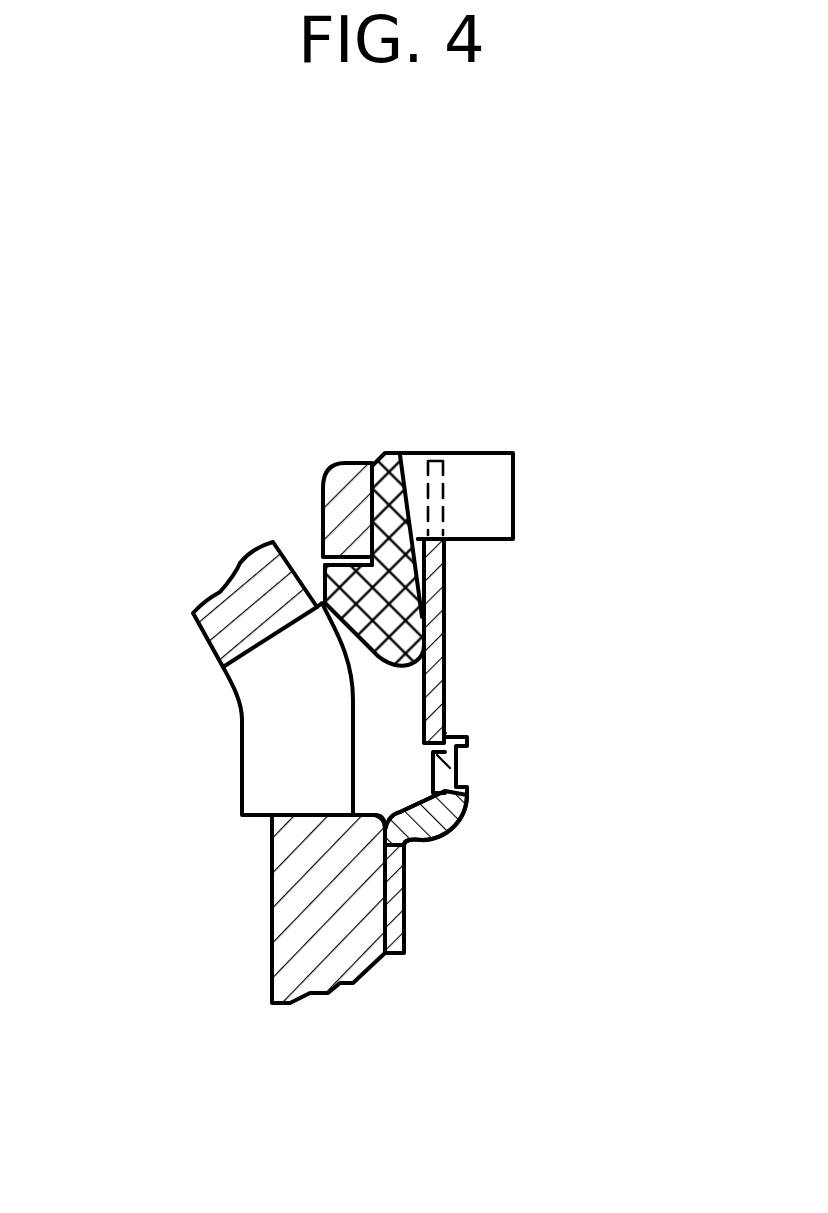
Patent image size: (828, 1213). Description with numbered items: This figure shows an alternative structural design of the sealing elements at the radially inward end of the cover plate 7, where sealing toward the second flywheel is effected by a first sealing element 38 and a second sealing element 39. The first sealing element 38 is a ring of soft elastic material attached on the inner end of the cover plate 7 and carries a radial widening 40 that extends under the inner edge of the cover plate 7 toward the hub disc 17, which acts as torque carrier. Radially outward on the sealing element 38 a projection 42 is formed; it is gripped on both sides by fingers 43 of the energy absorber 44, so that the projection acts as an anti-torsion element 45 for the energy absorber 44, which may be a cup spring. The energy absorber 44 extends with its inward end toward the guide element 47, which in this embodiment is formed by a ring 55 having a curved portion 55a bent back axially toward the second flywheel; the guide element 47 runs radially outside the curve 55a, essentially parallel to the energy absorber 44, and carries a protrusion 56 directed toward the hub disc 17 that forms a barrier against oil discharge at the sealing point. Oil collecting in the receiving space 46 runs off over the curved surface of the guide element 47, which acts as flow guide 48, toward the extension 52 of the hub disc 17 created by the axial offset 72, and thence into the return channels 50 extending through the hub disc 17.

The cover plate 7 is at (343, 490).
The hub disc 17 is at (297, 877).
The first sealing element 38 is at (400, 613).
The second sealing element 39 is at (449, 724).
The radial widening 40 is at (342, 585).
The projection 42 is at (493, 480).
The fingers 43 is at (447, 541).
The energy absorber 44 is at (443, 663).
The anti-torsion element 45 is at (434, 470).
The receiving space 46 is at (377, 677).
The guide element 47 is at (445, 770).
The flow guide 48 is at (430, 808).
The return channels 50 is at (267, 677).
The extension 52 is at (373, 813).
The ring 55 is at (397, 918).
The curved portion 55a is at (438, 835).
The protrusion 56 is at (447, 790).
The axial offset 72 is at (382, 885).